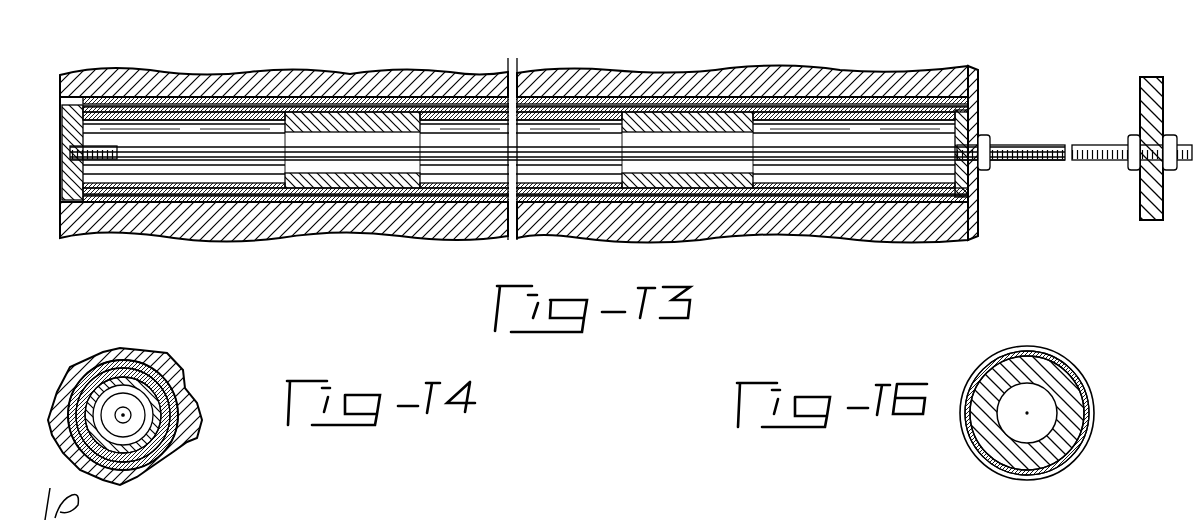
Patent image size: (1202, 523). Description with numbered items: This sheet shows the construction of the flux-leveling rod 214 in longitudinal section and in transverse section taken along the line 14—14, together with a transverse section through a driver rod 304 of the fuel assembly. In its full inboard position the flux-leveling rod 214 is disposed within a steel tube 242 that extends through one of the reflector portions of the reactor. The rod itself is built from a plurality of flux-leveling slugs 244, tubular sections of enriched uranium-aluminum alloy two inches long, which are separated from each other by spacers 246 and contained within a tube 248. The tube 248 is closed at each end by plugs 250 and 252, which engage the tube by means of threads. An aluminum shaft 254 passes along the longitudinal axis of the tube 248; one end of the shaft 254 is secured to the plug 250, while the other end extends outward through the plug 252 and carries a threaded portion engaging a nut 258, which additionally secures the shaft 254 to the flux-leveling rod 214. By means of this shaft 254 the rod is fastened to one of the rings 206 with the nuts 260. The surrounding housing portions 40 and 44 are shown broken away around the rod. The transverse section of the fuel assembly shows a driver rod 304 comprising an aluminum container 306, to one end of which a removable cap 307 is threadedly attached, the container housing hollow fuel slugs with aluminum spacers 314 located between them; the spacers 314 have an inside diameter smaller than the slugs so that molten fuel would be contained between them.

In FIG. 13, the section line 14— 14 is at (155, 258).
In FIG. 13, the housing section 40 is at (475, 223).
In FIG. 14, the housing section 40 is at (80, 385).
In FIG. 13, the housing section 44 is at (653, 239).
In FIG. 13, the ring 206 is at (1152, 200).
In FIG. 13, the flux-leveling rod 214 is at (886, 101).
In FIG. 14, the flux-leveling rod 214 is at (98, 370).
In FIG. 13, the steel tube 242 is at (758, 112).
In FIG. 14, the steel tube 242 is at (160, 422).
In FIG. 13, the flux-leveling slug 244 is at (243, 170).
In FIG. 13, the spacer 246 is at (372, 180).
In FIG. 13, the tube 248 is at (392, 107).
In FIG. 14, the tube 248 is at (148, 373).
In FIG. 13, the plug 250 is at (88, 171).
In FIG. 13, the plug 252 is at (967, 128).
In FIG. 13, the shaft 254 is at (918, 152).
In FIG. 14, the shaft 254 is at (130, 417).
In FIG. 13, the nut 258 is at (988, 170).
In FIG. 13, the nuts 260 is at (1170, 172).
In FIG. 16, the driver rod 304 is at (1050, 343).
In FIG. 16, the aluminum container 306 is at (1087, 407).
In FIG. 16, the removable cap 307 is at (1085, 383).
In FIG. 16, the aluminum spacer 314 is at (1068, 435).